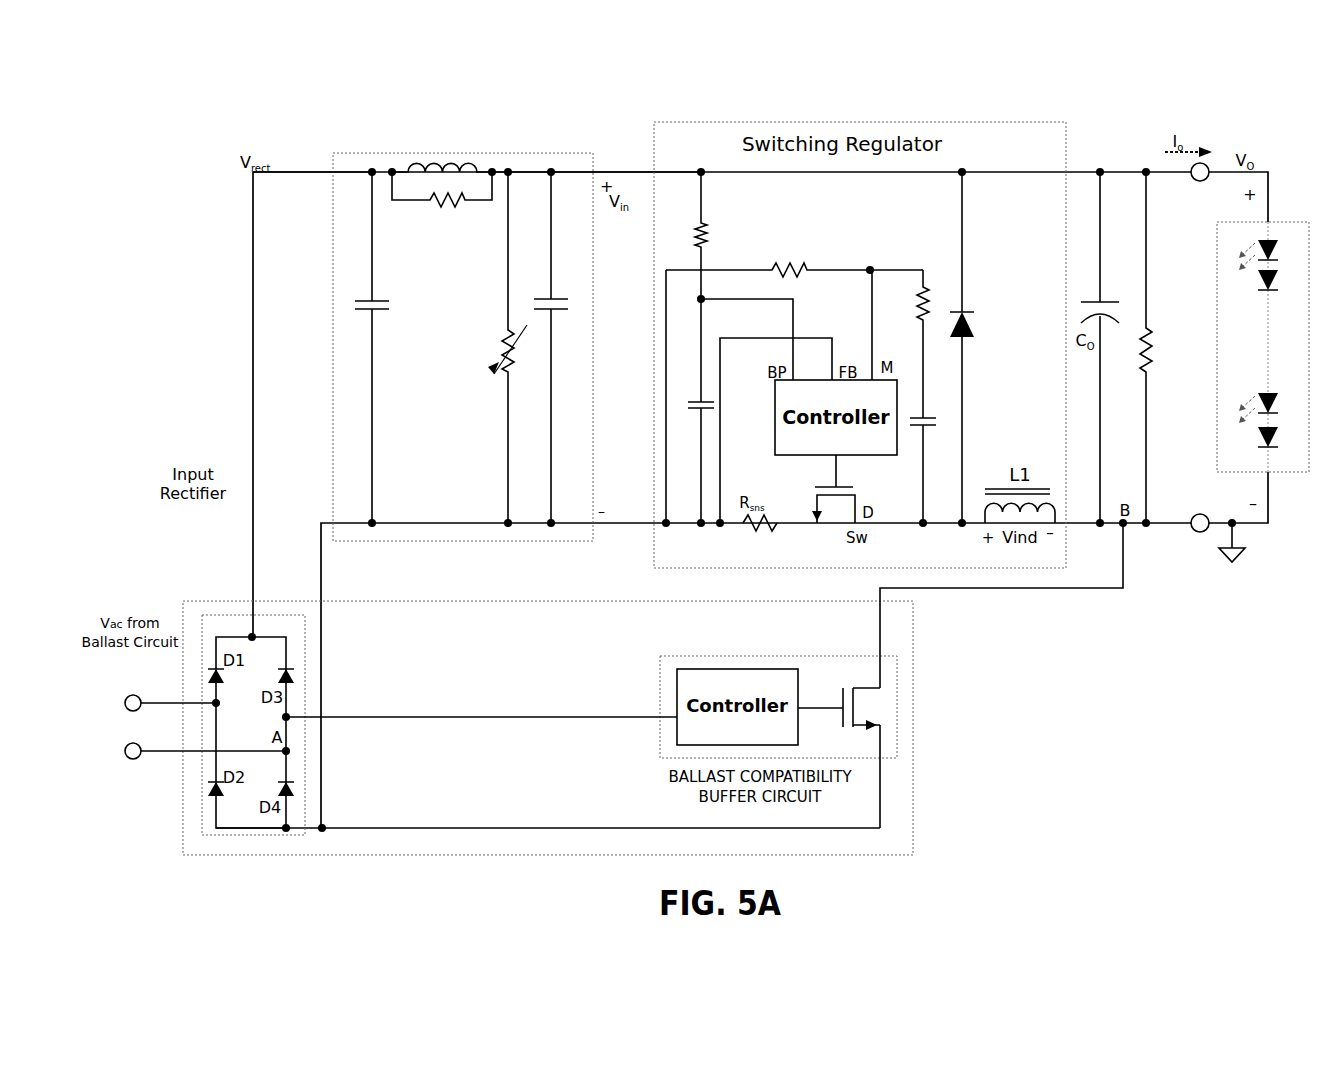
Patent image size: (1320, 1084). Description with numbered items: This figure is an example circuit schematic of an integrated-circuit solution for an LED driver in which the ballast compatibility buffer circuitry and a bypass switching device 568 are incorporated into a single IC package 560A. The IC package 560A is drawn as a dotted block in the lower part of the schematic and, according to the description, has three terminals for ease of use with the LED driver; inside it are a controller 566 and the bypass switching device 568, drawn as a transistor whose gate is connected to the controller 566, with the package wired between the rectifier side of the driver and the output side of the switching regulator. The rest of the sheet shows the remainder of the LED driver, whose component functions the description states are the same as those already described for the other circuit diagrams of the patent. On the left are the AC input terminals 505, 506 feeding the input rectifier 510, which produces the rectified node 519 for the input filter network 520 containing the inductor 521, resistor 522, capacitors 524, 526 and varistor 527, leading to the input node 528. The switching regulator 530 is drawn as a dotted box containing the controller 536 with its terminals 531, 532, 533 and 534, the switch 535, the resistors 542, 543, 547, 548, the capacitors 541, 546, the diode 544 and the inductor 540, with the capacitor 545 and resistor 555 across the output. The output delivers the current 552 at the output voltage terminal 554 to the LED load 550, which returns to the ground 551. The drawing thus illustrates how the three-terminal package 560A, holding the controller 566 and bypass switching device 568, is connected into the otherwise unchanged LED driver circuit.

The first AC input terminal 505 is at (142, 695).
The second AC input terminal 506 is at (145, 747).
The input rectifier 510 is at (228, 587).
The rectified voltage node 519 is at (283, 167).
The input filter network 520 is at (518, 156).
The inductor 521 is at (460, 155).
The damping resistor 522 is at (432, 197).
The capacitor 524 is at (366, 296).
The capacitor 526 is at (558, 296).
The varistor 527 is at (493, 345).
The input voltage node 528 is at (615, 168).
The switching regulator 530 is at (822, 114).
The bypass terminal 531 is at (768, 377).
The feedback terminal 532 is at (839, 353).
The multi-function terminal 533 is at (886, 354).
The gate drive terminal 534 is at (822, 470).
The power switch transistor 535 is at (834, 508).
The controller 536 is at (786, 432).
The inductor L1 540 is at (1020, 463).
The bypass capacitor 541 is at (698, 398).
The sense resistor 542 is at (765, 532).
The resistor 543 is at (709, 239).
The diode 544 is at (978, 318).
The output capacitor 545 is at (1107, 301).
The capacitor 546 is at (917, 433).
The resistor 547 is at (929, 310).
The resistor 548 is at (786, 262).
The LED load 550 is at (1287, 218).
The ground 551 is at (1227, 564).
The output current 552 is at (1187, 126).
The output voltage terminal 554 is at (1247, 143).
The resistor 555 is at (1155, 338).
The IC package 560A is at (660, 692).
The buffer controller 566 is at (825, 707).
The bypass switching device 568 is at (867, 708).